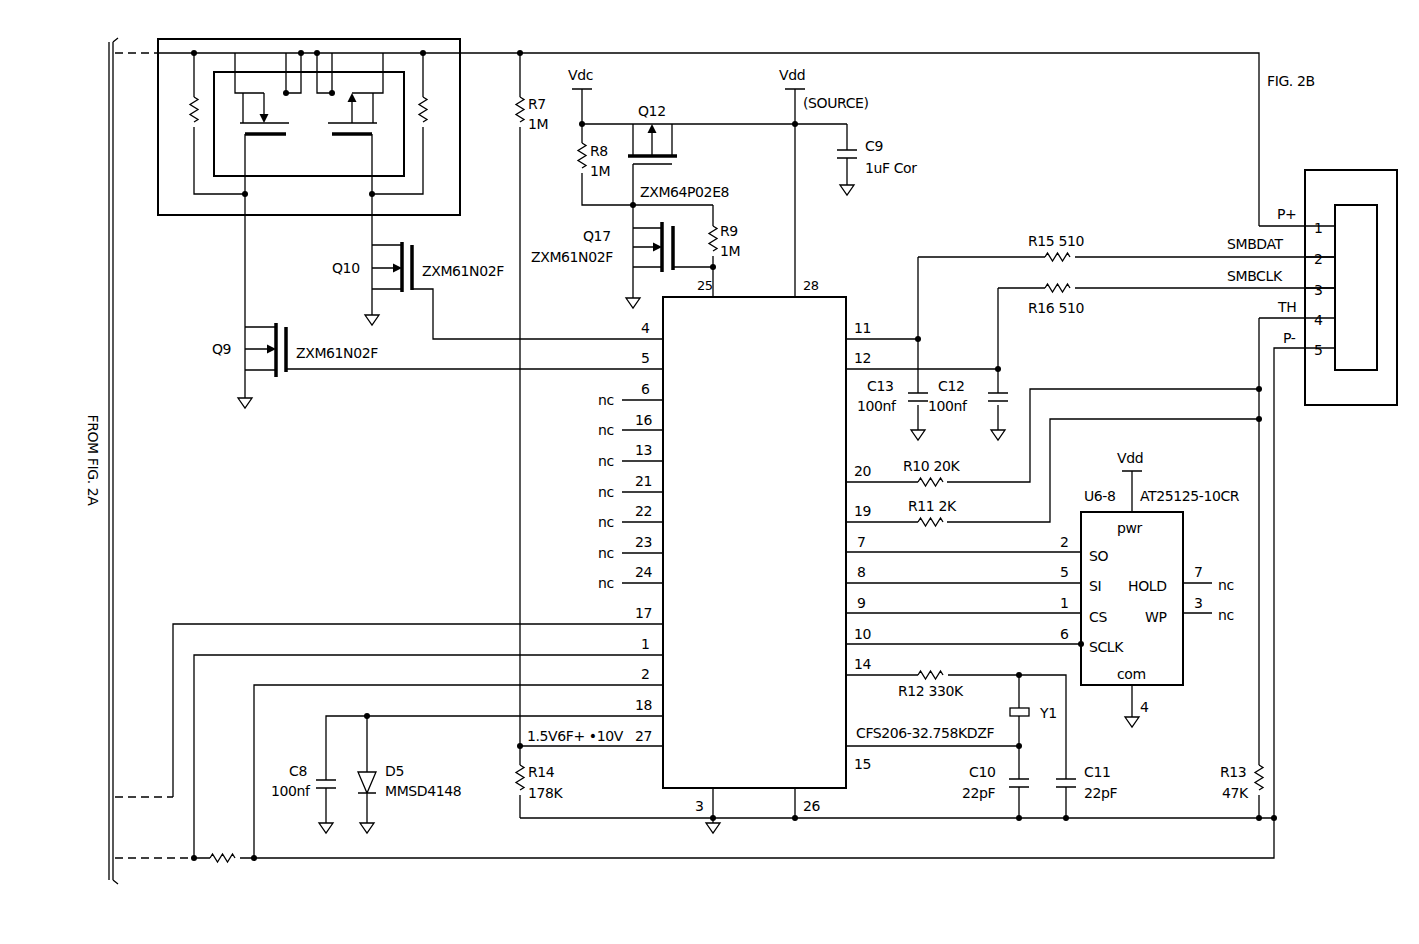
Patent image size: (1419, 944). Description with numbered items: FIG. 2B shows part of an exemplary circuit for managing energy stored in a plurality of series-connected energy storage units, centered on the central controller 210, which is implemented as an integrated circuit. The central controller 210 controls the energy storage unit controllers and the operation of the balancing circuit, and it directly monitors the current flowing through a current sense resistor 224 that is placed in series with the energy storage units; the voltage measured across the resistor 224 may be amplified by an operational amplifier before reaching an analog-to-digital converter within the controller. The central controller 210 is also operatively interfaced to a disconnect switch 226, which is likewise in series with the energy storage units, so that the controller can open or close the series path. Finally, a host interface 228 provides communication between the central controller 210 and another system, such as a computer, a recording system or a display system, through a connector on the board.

The disconnect switch 226 is at (202, 219).
The current sense resistor 224 is at (222, 862).
The host interface 228 is at (1356, 170).
The central controller 210 is at (774, 604).